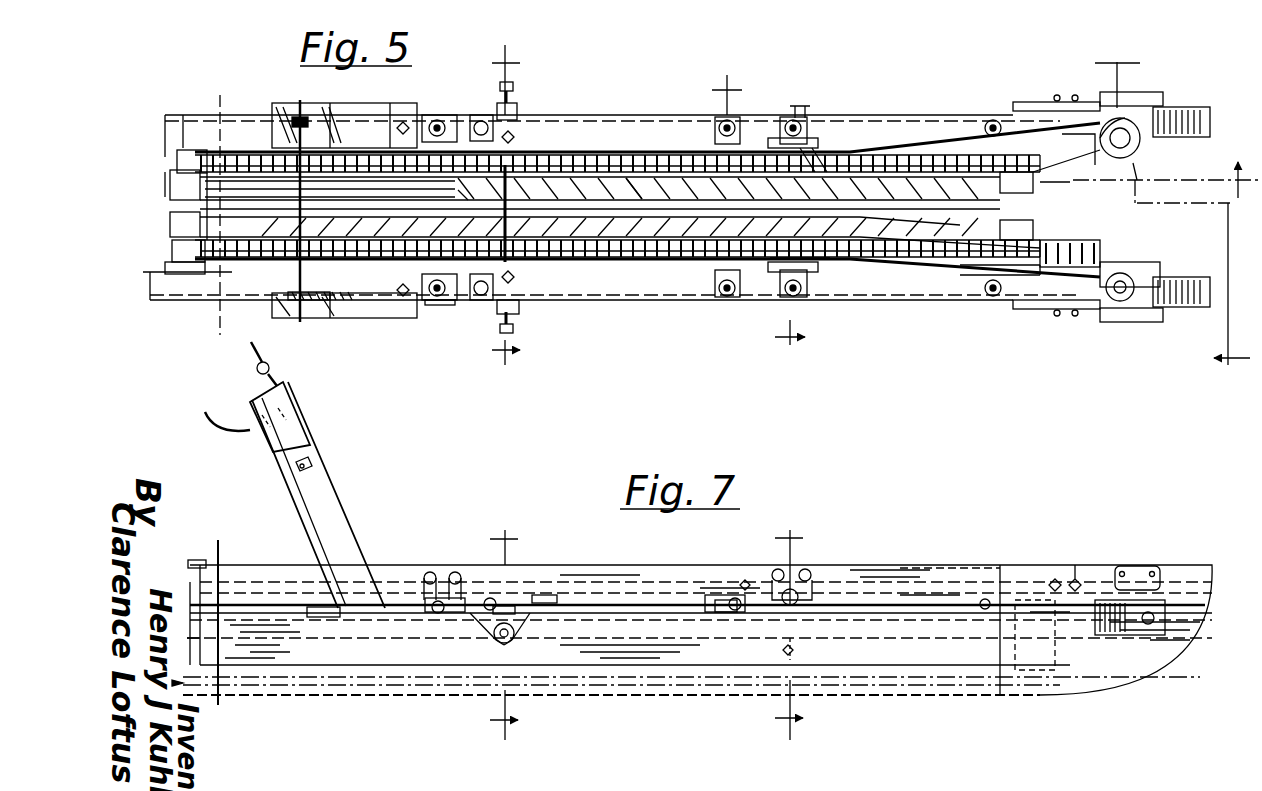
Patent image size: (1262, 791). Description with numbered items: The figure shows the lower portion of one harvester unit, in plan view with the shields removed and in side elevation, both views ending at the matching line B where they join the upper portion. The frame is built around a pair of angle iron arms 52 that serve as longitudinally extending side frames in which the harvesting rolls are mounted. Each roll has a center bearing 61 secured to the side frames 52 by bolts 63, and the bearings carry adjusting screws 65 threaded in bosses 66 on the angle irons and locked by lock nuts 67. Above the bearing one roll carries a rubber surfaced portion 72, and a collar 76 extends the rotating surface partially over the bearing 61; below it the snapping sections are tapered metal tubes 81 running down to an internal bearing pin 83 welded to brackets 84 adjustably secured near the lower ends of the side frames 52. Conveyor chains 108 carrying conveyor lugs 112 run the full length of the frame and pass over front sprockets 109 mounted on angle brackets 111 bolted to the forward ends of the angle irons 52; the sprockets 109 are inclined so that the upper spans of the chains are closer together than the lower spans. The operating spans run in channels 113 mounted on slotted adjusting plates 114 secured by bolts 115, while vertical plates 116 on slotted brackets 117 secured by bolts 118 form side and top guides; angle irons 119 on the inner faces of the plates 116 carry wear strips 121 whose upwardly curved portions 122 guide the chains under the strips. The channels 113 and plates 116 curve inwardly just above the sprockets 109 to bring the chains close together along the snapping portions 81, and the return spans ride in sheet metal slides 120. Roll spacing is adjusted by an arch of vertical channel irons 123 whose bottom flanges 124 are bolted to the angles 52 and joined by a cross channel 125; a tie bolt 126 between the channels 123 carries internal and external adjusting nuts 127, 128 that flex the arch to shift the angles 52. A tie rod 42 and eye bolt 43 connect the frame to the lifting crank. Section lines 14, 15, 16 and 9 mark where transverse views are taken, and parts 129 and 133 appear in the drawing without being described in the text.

In FIG. 5, the angle iron arms 52 is at (660, 118).
In FIG. 7, the angle iron arms 52 is at (620, 668).
In FIG. 5, the conveyor chains 108 is at (900, 150).
In FIG. 7, the conveyor chains 108 is at (195, 600).
In FIG. 5, the conveyor lugs 112 is at (372, 150).
In FIG. 5, the tie bolt 126 is at (300, 190).
In FIG. 7, the tie bolt 126 is at (312, 466).
In FIG. 5, the collar 76 is at (470, 192).
In FIG. 5, the tapered metal tubes 81 is at (640, 182).
In FIG. 5, the internal adjusting nut 127 is at (306, 118).
In FIG. 5, the external adjusting nut 128 is at (311, 226).
In FIG. 5, the vertical channel irons 123 is at (292, 105).
In FIG. 7, the vertical channel irons 123 is at (330, 483).
In FIG. 5, the rubber surfaced portion 72 is at (332, 125).
In FIG. 5, the angle irons 119 is at (255, 150).
In FIG. 7, the angle irons 119 is at (718, 595).
In FIG. 5, the channels 113 is at (178, 275).
In FIG. 7, the channels 113 is at (245, 600).
In FIG. 5, the slotted brackets 117 is at (430, 115).
In FIG. 7, the slotted brackets 117 is at (430, 572).
In FIG. 5, the bolts 118 is at (793, 117).
In FIG. 7, the bolts 118 is at (455, 572).
In FIG. 5, the bolts 115 is at (740, 120).
In FIG. 7, the bolts 115 is at (495, 598).
In FIG. 5, the bracket 129 is at (440, 305).
In FIG. 5, the vertical plates 116 is at (815, 140).
In FIG. 7, the vertical plates 116 is at (960, 560).
In FIG. 5, the upwardly curved portions 122 is at (812, 150).
In FIG. 7, the upwardly curved portions 122 is at (815, 572).
In FIG. 5, the pin 133 is at (810, 120).
In FIG. 5, the wear strips 121 is at (810, 270).
In FIG. 7, the wear strips 121 is at (205, 562).
In FIG. 5, the adjusting screws 65 is at (500, 92).
In FIG. 7, the adjusting screws 65 is at (495, 645).
In FIG. 5, the bosses 66 is at (513, 86).
In FIG. 7, the bosses 66 is at (515, 632).
In FIG. 5, the center bearing 61 is at (517, 112).
In FIG. 5, the bolts 63 is at (512, 135).
In FIG. 7, the bolts 63 is at (545, 594).
In FIG. 5, the lock nuts 67 is at (500, 327).
In FIG. 7, the lock nuts 67 is at (515, 641).
In FIG. 5, the angle brackets 111 is at (1163, 100).
In FIG. 5, the front sprockets 109 is at (1150, 140).
In FIG. 5, the internal bearing pin 83 is at (1050, 185).
In FIG. 5, the brackets 84 is at (1080, 248).
In FIG. 7, the sheet metal slides 120 is at (300, 695).
In FIG. 7, the slotted adjusting plates 114 is at (712, 598).
In FIG. 7, the bottom flanges 124 is at (352, 560).
In FIG. 7, the cross channel 125 is at (300, 398).
In FIG. 7, the tie rod 42 is at (252, 350).
In FIG. 7, the eye bolt 43 is at (270, 370).
In FIG. 5, the section line 14 is at (506, 209).
In FIG. 7, the section line 14 is at (505, 635).
In FIG. 5, the section line 15 is at (760, 212).
In FIG. 7, the section line 15 is at (790, 633).
In FIG. 5, the section line 16 is at (1167, 209).
In FIG. 5, the section line 9 is at (694, 183).
In FIG. 5, the matching line B— B is at (215, 206).
In FIG. 7, the matching line B— B is at (213, 626).